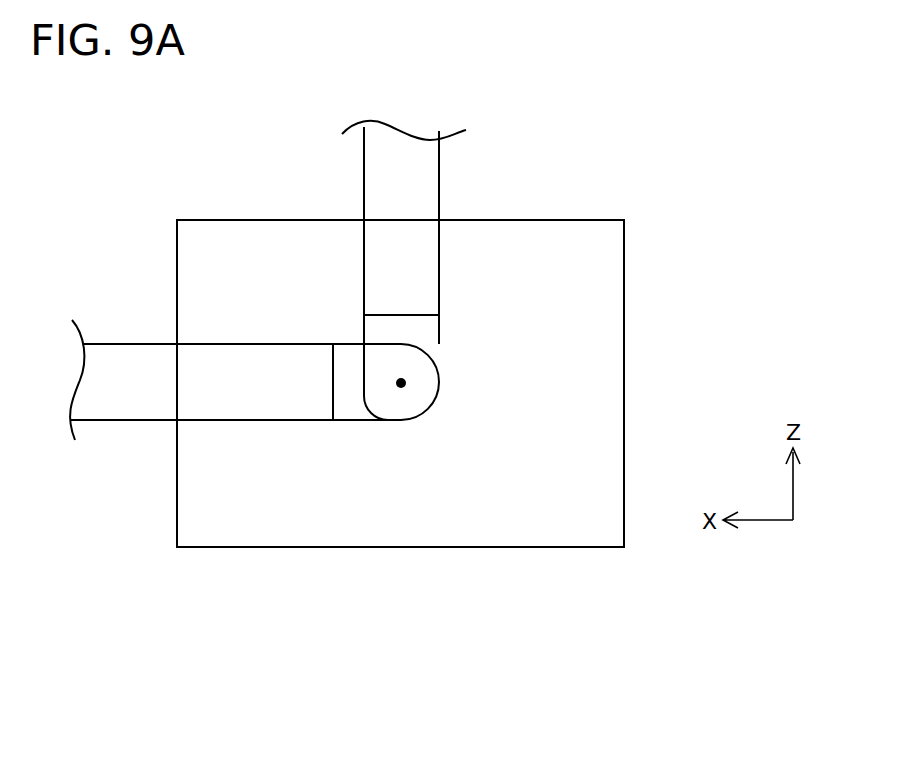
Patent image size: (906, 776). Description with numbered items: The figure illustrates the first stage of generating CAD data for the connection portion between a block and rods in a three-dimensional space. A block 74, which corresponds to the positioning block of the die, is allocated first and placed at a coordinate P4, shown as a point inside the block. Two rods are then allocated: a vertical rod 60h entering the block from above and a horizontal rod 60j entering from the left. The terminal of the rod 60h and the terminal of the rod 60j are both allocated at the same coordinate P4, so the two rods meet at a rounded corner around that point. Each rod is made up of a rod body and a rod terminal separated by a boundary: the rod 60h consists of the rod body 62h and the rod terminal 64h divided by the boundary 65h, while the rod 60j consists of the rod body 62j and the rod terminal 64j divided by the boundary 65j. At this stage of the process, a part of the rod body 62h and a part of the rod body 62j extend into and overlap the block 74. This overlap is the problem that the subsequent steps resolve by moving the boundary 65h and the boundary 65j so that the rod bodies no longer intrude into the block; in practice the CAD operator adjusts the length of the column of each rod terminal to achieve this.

The block 74 is at (605, 282).
The rod body 62h is at (445, 158).
The boundary 65h is at (400, 315).
The rod terminal 64h is at (416, 330).
The rod 60h is at (548, 125).
The rod body 62j is at (152, 402).
The boundary 65j is at (333, 383).
The rod terminal 64j is at (352, 403).
The rod 60j is at (352, 608).
The coordinate P4 is at (401, 383).